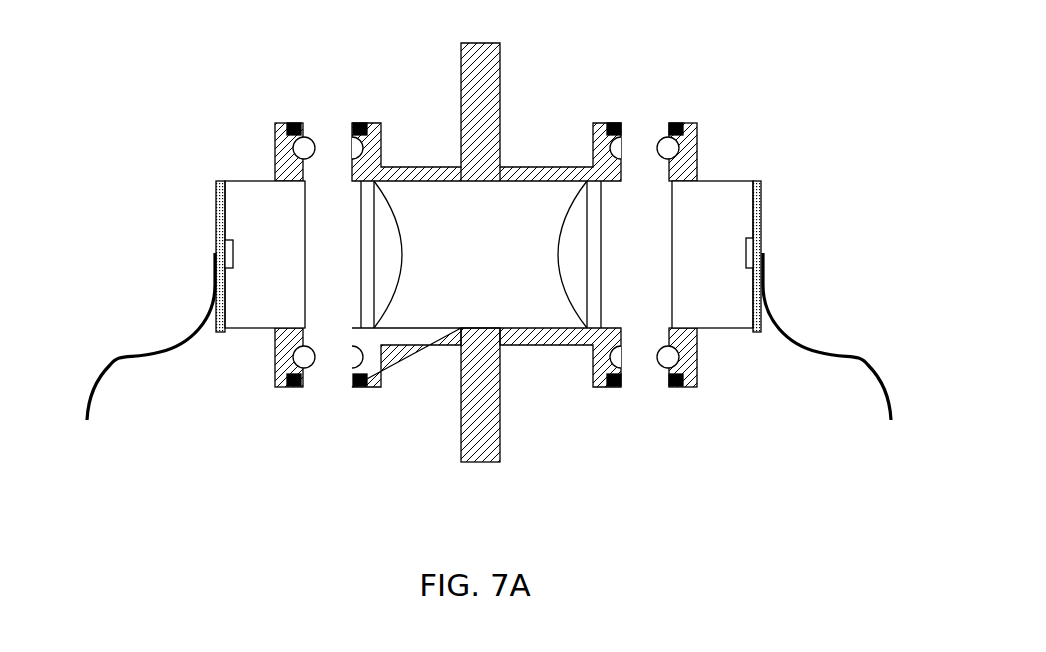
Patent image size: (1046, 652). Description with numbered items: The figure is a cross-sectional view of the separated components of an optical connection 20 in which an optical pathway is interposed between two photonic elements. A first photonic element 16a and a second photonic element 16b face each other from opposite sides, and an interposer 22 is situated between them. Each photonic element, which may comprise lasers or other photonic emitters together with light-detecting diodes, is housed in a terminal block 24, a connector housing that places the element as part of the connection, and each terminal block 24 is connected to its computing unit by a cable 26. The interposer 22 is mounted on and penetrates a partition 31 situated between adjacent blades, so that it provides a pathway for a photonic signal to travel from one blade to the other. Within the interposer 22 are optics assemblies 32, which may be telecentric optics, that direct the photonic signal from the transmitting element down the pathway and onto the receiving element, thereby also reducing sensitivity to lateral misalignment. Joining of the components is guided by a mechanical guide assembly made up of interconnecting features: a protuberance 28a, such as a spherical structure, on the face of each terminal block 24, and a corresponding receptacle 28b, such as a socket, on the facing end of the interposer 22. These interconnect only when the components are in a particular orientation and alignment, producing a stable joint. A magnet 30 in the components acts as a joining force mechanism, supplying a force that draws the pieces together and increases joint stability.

The optical connection 20 is at (238, 49).
The interposer 22 is at (523, 167).
The terminal block 24 is at (232, 180).
The cable 26 is at (115, 358).
The protuberance 28a is at (304, 137).
The receptacle 28b is at (352, 157).
The magnet 30 is at (290, 124).
The partition 31 is at (483, 463).
The optics assembly 32 is at (558, 269).
The first photonic element 16a is at (228, 242).
The second photonic element 16b is at (753, 250).